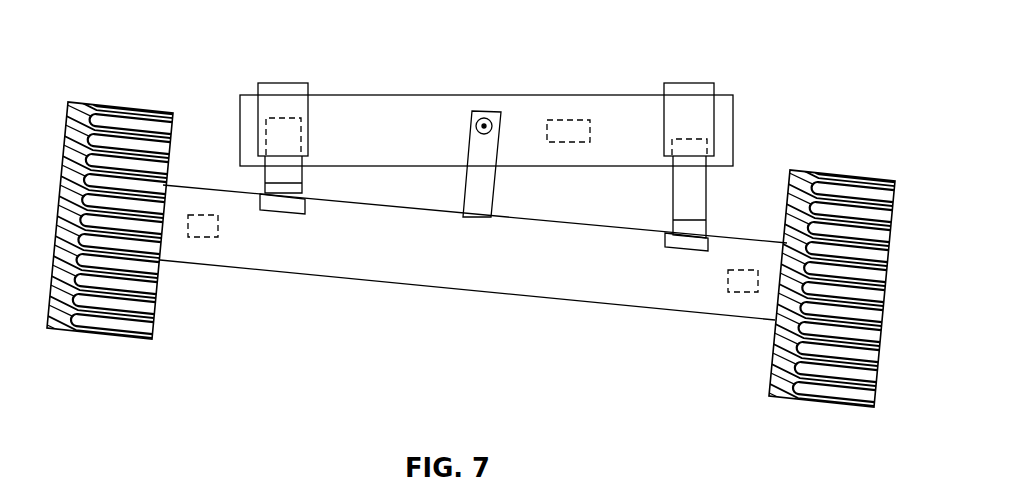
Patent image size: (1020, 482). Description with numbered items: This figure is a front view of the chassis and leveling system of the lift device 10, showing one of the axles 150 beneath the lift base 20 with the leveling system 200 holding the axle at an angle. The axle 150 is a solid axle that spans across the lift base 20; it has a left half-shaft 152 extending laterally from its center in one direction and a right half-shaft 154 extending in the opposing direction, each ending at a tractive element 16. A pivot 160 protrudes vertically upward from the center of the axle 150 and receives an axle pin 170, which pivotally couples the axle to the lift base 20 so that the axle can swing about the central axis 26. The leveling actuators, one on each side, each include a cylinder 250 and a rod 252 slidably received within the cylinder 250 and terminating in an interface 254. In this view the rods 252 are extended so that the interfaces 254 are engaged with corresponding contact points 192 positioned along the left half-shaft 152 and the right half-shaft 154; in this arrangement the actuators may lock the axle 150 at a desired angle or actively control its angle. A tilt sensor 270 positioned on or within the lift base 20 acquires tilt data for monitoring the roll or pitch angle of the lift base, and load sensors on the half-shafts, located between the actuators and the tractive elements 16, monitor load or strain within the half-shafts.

The lift device 10 is at (88, 78).
The tractive element 16 is at (107, 330).
The lift base 20 is at (338, 105).
The central axis 26 is at (493, 128).
The axle 150 is at (468, 272).
The left half-shaft 152 is at (707, 337).
The right half-shaft 154 is at (234, 272).
The pivot 160 is at (473, 170).
The axle pin 170 is at (485, 118).
The contact point 192 is at (292, 205).
The leveling system 200 is at (750, 31).
The cylinder 250 is at (293, 83).
The rod 252 is at (290, 145).
The interface 254 is at (293, 192).
The tilt sensor 270 is at (572, 122).